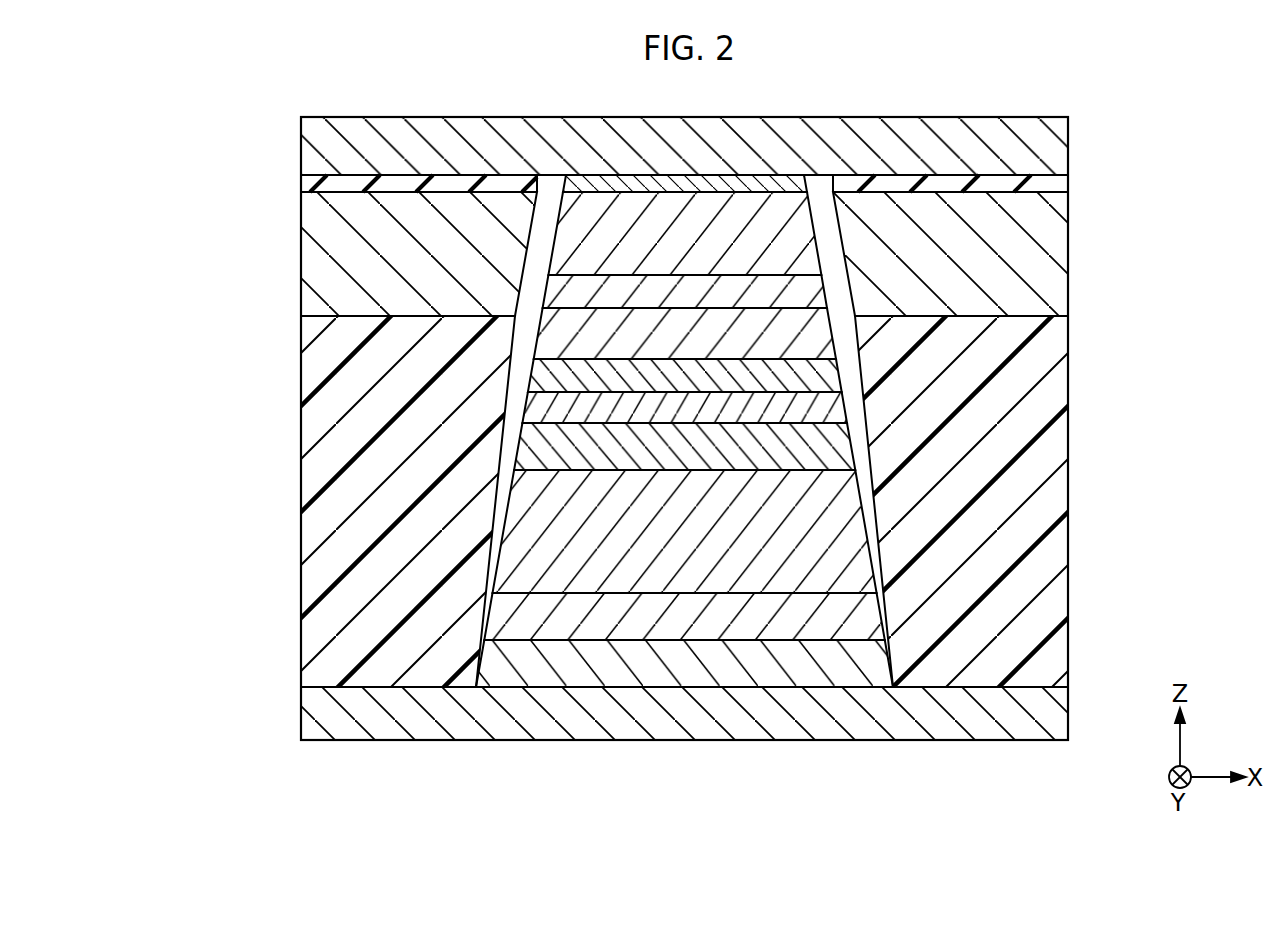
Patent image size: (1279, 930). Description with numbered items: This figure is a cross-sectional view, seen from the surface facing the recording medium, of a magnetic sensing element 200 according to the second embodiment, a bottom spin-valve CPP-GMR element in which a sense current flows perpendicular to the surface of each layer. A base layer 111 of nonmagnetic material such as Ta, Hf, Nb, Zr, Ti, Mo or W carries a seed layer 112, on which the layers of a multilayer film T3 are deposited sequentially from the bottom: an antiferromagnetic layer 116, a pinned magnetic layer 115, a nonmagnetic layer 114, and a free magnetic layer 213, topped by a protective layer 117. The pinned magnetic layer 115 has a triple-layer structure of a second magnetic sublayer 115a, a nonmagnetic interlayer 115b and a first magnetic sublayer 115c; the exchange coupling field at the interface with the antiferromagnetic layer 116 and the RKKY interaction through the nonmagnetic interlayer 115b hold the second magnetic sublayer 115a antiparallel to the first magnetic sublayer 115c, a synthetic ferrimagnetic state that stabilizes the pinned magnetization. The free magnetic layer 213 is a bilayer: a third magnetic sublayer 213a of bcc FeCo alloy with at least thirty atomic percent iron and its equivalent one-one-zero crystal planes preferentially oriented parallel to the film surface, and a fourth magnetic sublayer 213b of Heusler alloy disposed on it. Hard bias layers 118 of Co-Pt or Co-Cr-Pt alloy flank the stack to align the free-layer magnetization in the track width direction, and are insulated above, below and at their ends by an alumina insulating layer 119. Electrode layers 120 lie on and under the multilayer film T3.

The magnetic sensing element 200 is at (1105, 158).
The base layer 111 is at (657, 733).
The seed layer 112 is at (680, 625).
The antiferromagnetic layer 116 is at (712, 547).
The pinned magnetic layer 115 is at (663, 610).
The second magnetic sublayer 115a is at (647, 377).
The nonmagnetic interlayer 115b is at (603, 410).
The first magnetic sublayer 115c is at (580, 445).
The nonmagnetic layer 114 is at (703, 338).
The free magnetic layer 213 is at (738, 524).
The third magnetic sublayer 213a is at (735, 295).
The fourth magnetic sublayer 213b is at (763, 255).
The protective layer 117 is at (783, 188).
The hard bias layer 118 is at (335, 253).
The insulating layer 119 is at (333, 502).
The electrode layer 120 is at (335, 143).
The multilayer film T3 is at (697, 543).